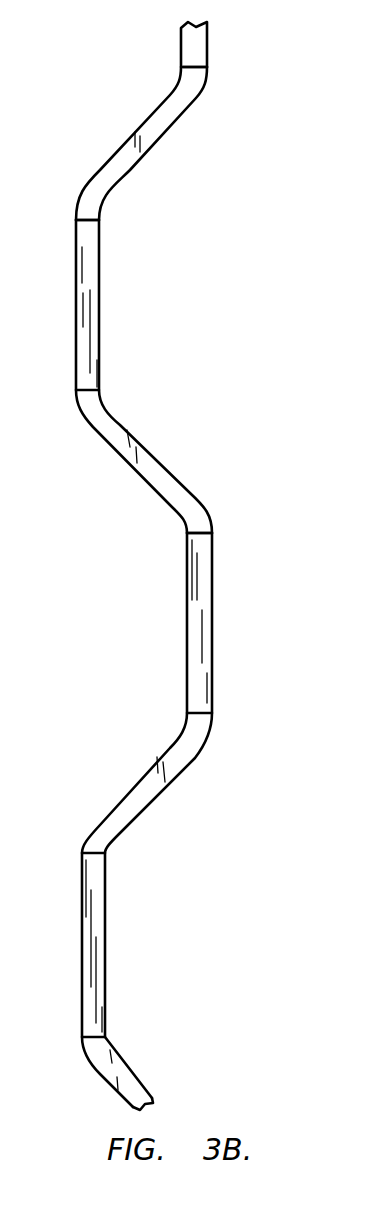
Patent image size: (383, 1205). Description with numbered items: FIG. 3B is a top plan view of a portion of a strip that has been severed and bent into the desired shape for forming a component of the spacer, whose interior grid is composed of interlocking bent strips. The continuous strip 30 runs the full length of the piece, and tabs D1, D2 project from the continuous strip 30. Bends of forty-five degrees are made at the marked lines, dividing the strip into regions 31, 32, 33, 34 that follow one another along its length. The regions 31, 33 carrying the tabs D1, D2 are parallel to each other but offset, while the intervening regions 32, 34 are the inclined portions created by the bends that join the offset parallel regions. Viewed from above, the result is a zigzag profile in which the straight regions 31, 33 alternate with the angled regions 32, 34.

The continuous strip 30 is at (156, 566).
The region 31 is at (76, 320).
The region 32 is at (123, 458).
The region 33 is at (187, 618).
The region 34 is at (133, 780).
The tab D1 is at (99, 283).
The tab D2 is at (213, 615).